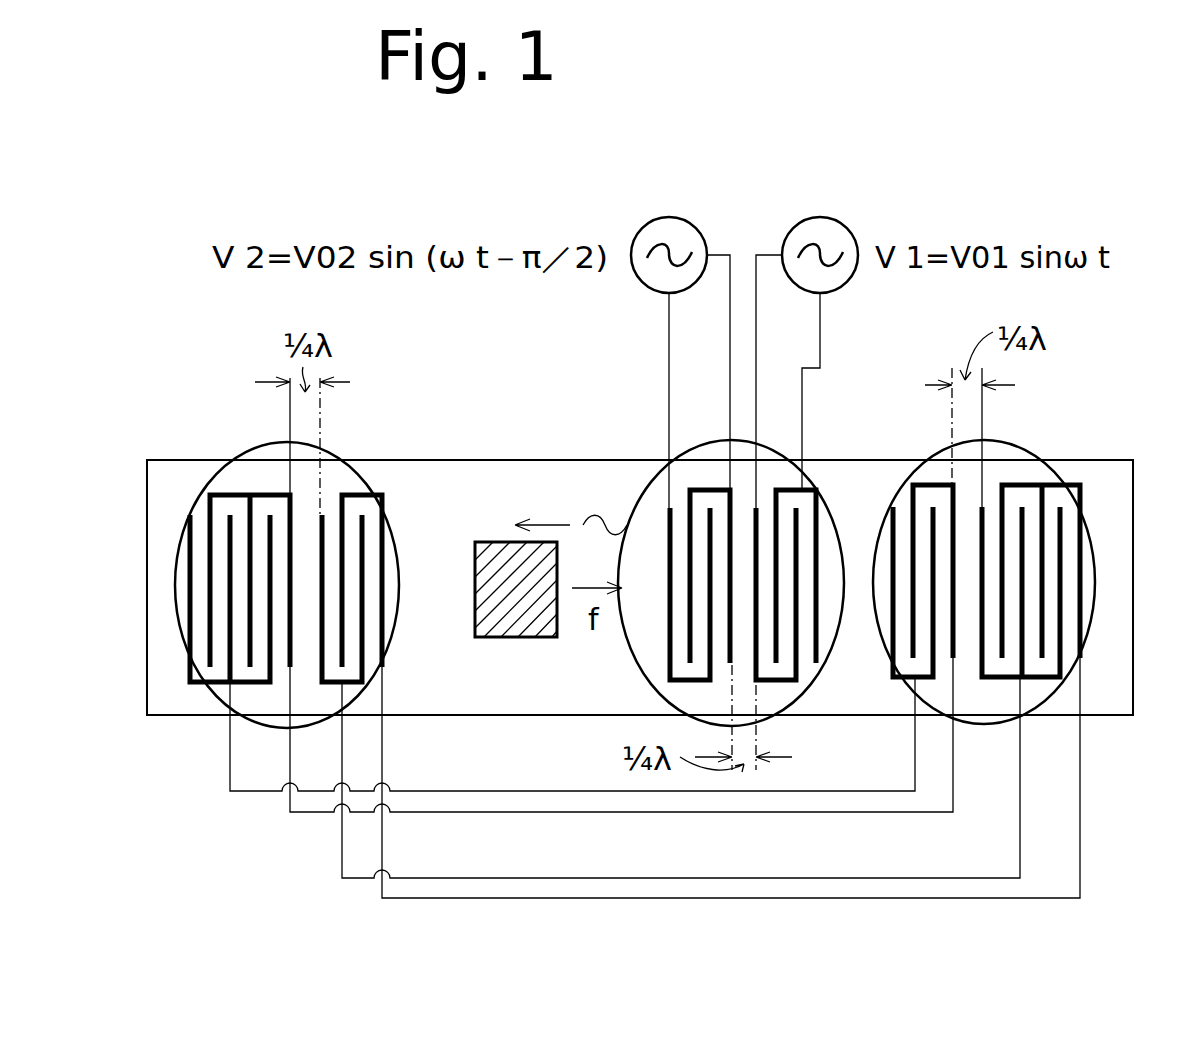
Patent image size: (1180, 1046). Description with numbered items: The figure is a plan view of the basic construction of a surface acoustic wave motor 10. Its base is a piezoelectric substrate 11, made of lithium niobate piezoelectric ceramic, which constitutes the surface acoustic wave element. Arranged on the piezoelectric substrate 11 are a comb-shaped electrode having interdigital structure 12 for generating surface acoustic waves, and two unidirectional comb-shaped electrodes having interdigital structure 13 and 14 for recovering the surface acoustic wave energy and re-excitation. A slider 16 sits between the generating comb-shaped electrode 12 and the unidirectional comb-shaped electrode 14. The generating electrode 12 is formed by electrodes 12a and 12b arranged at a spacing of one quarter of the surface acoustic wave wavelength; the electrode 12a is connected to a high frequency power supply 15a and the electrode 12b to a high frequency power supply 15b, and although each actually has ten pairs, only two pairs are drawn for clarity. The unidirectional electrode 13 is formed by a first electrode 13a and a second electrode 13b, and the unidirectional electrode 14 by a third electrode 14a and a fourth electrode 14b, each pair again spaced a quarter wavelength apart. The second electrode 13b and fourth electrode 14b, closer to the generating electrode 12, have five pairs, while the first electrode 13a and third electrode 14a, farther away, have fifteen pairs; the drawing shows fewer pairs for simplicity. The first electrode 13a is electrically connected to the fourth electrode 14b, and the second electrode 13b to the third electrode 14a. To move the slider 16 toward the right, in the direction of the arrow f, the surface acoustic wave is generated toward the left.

The surface acoustic wave motor 10 is at (207, 825).
The piezoelectric substrate 11 is at (531, 475).
The comb-shaped electrode having interdigital structure 12 is at (732, 579).
The electrode 12a is at (816, 487).
The electrode 12b is at (665, 508).
The unidirectional comb-shaped electrode having interdigital structure 13 is at (1010, 559).
The first electrode 13a is at (1077, 485).
The second electrode 13b is at (927, 487).
The unidirectional comb-shaped electrode having interdigital structure 14 is at (285, 583).
The third electrode 14a is at (203, 467).
The fourth electrode 14b is at (370, 487).
The high frequency power supply 15a is at (820, 228).
The high frequency power supply 15b is at (663, 228).
The slider 16 is at (505, 542).